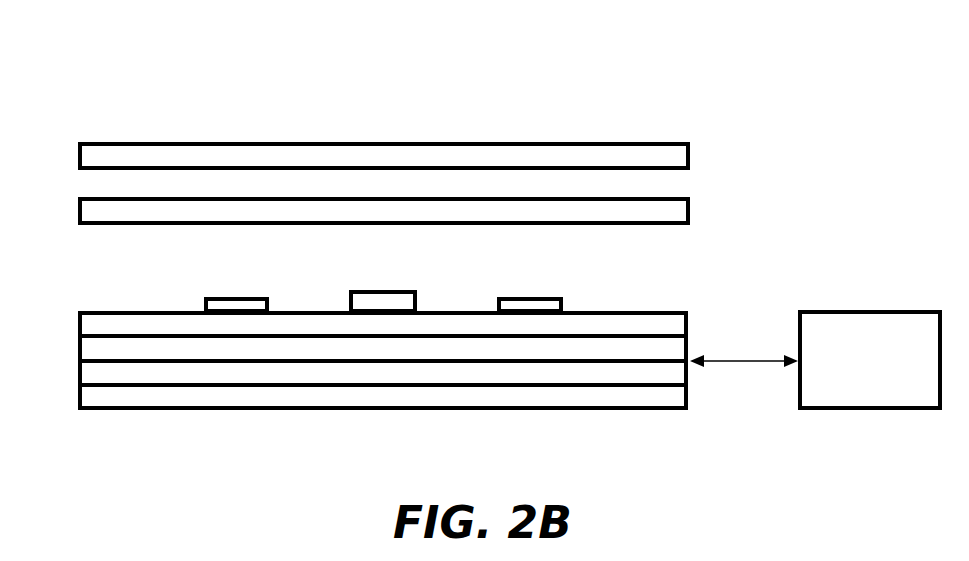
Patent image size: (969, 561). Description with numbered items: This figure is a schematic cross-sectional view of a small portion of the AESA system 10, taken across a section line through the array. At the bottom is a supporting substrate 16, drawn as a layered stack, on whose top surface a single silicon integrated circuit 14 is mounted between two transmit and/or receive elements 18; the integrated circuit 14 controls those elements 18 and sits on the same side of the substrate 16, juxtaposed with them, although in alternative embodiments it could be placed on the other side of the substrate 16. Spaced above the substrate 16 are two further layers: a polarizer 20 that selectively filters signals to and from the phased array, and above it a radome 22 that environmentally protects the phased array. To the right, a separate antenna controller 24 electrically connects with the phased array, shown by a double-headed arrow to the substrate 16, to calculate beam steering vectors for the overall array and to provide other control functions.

The AESA system 10 is at (338, 77).
The radome 22 is at (684, 151).
The polarizer 20 is at (684, 208).
The substrate 16 is at (72, 313).
The silicon integrated circuit 14 is at (381, 300).
The transmit and/or receive elements 18 is at (236, 308).
The antenna controller 24 is at (857, 392).